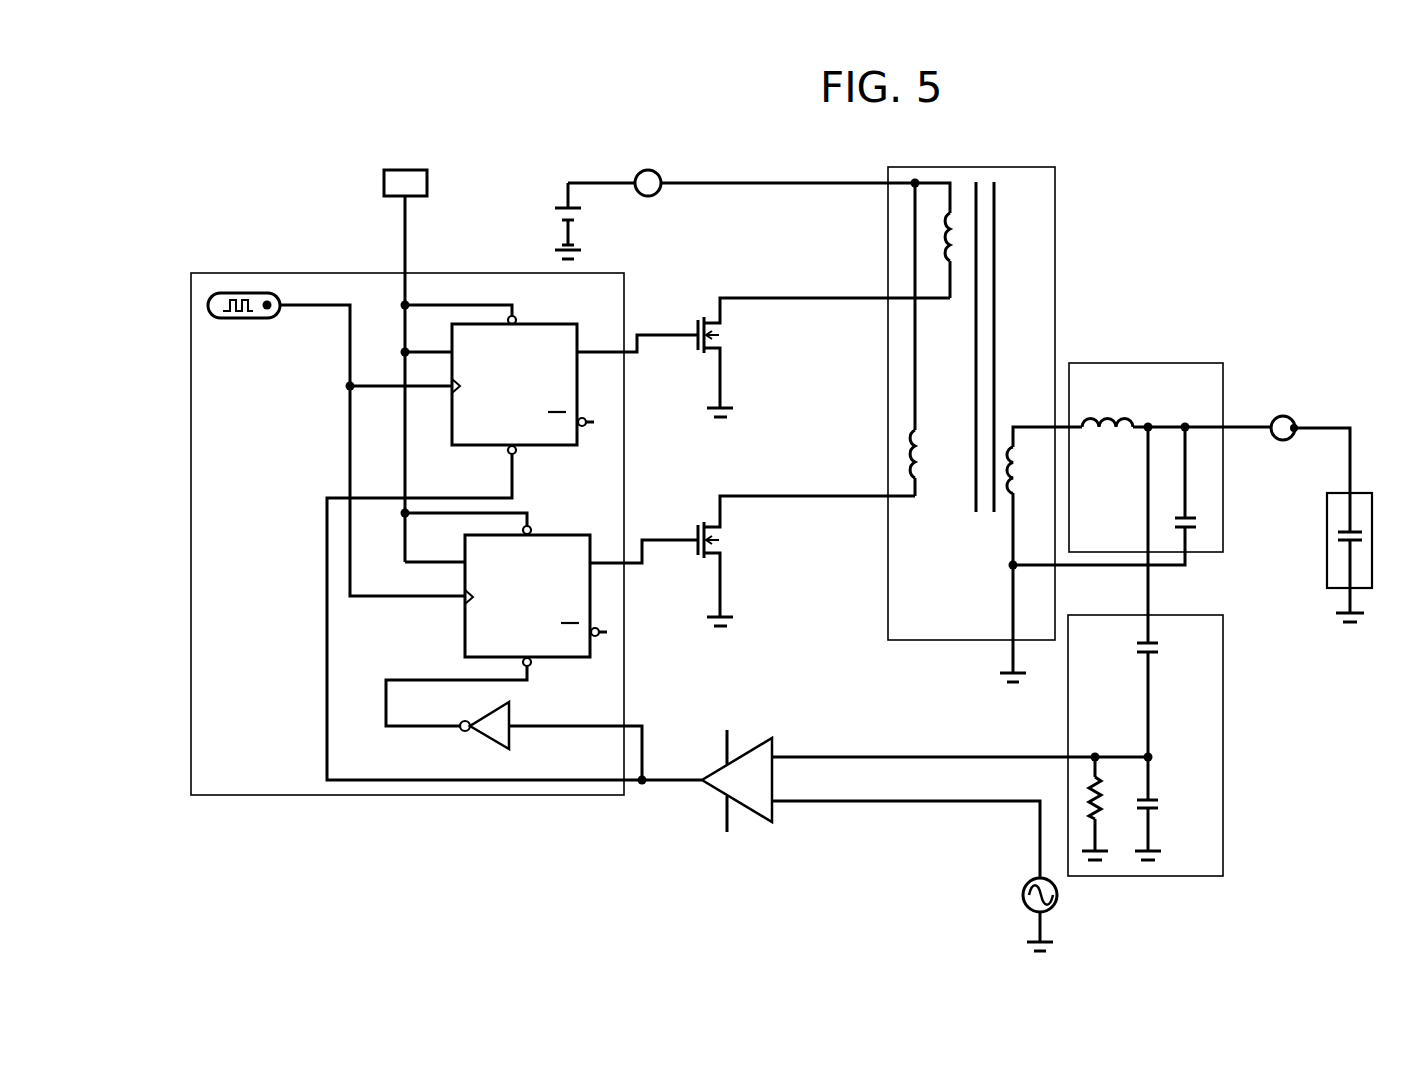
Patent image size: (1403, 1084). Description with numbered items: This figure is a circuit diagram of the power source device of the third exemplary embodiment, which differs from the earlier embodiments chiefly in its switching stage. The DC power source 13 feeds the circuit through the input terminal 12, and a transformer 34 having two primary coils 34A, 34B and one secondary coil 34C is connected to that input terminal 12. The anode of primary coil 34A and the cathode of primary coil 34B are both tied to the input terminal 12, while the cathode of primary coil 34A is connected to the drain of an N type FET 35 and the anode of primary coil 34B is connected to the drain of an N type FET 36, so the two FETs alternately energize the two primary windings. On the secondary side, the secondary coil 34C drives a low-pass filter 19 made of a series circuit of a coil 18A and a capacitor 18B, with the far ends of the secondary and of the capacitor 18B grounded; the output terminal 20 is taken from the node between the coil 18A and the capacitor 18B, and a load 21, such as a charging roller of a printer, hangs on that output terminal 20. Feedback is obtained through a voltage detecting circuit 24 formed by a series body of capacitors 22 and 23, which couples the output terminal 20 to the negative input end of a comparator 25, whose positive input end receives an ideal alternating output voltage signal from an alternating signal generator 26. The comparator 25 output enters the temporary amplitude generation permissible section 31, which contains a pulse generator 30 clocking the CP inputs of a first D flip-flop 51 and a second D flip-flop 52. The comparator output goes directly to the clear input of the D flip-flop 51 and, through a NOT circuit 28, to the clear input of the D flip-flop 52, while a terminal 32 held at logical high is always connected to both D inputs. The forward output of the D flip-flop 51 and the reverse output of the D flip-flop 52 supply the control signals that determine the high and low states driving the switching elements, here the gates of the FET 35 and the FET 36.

The input terminal 12 is at (635, 175).
The DC power source 13 is at (546, 218).
The coil 18A is at (1110, 408).
The capacitor 18B is at (1203, 520).
The low-pass filter 19 is at (1165, 362).
The output terminal 20 is at (1288, 412).
The load 21 is at (1323, 557).
The capacitor 22 is at (1165, 650).
The capacitor 23 is at (1165, 806).
The voltage detecting circuit 24 is at (1223, 735).
The comparator 25 is at (722, 792).
The alternating signal generator 26 is at (1017, 893).
The NOT circuit 28 is at (472, 742).
The pulse generator 30 is at (247, 322).
The temporary amplitude generation permissible section 31 is at (252, 271).
The terminal 32 is at (383, 180).
The transformer 34 is at (1057, 200).
The primary coil 34A is at (930, 228).
The primary coil 34B is at (897, 457).
The secondary coil 34C is at (1007, 440).
The N type FET 35 is at (726, 343).
The N type FET 36 is at (725, 545).
The D flip-flop 51 is at (543, 323).
The D flip-flop 52 is at (542, 533).